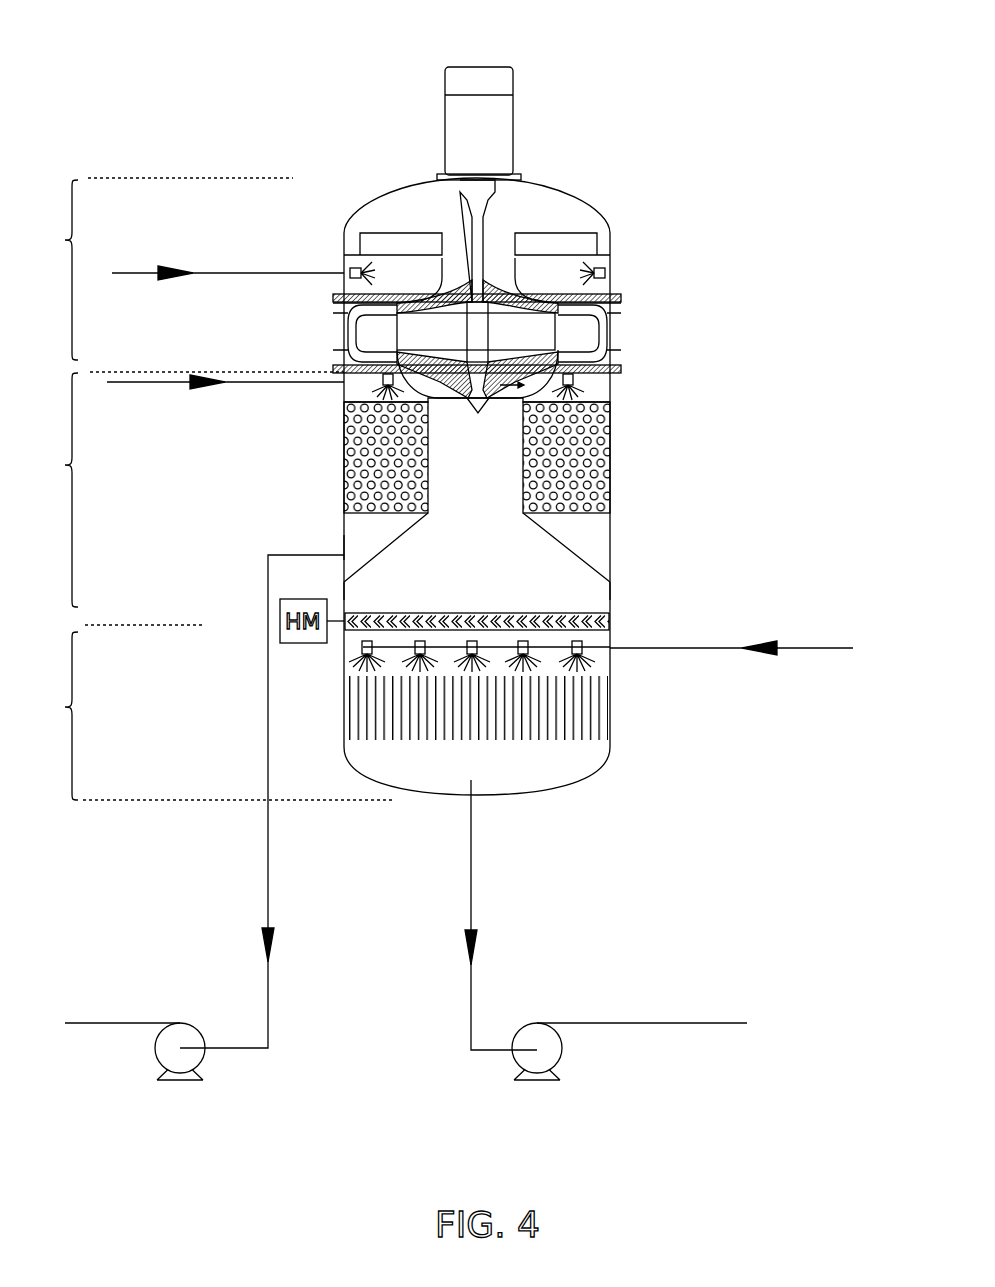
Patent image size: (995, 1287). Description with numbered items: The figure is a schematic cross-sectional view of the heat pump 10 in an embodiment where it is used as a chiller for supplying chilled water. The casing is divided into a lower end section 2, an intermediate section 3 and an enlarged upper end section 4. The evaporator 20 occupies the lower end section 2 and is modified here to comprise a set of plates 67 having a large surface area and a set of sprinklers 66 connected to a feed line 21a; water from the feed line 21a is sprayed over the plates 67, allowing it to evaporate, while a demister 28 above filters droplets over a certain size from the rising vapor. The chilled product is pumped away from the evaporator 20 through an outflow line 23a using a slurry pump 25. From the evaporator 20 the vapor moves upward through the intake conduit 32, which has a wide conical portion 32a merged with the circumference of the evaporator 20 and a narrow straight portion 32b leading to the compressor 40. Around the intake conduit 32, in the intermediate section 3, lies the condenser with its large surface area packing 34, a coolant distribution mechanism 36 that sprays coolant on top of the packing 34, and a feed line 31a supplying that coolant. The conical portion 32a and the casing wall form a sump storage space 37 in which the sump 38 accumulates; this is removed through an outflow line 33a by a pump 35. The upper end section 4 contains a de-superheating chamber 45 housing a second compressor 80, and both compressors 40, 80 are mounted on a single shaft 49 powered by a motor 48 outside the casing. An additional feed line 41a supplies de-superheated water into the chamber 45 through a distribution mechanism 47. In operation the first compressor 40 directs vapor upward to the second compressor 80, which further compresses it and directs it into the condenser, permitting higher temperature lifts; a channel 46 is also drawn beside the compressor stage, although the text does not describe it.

The heat pump 10 is at (666, 114).
The evaporator 20 is at (334, 486).
The motor 48 is at (468, 76).
The main shaft 49 is at (473, 240).
The de-superheating chamber 45 is at (565, 212).
The second compressor 80 is at (522, 292).
The recirculation channel 46 is at (344, 323).
The compressor 40 is at (334, 228).
The distribution mechanism 47 is at (612, 278).
The additional feed line 41a is at (216, 274).
The feed line 31a is at (171, 385).
The coolant distribution mechanism 36 is at (344, 410).
The packing 34 is at (344, 452).
The narrow straight portion 32b is at (490, 470).
The intake conduit 32 is at (612, 555).
The sump storage space 37 is at (344, 522).
The sump 38 is at (344, 535).
The wide conical portion 32a is at (565, 592).
The demister 28 is at (612, 633).
The sprinklers 66 is at (612, 655).
The plates 67 is at (610, 722).
The feed line 21a is at (790, 648).
The outflow line 33a is at (266, 858).
The outflow line 23a is at (471, 885).
The pump 35 is at (180, 1080).
The slurry pump 25 is at (537, 1080).
The upper end section 4 is at (167, 269).
The intermediate section 3 is at (193, 489).
The lower end section 2 is at (216, 712).